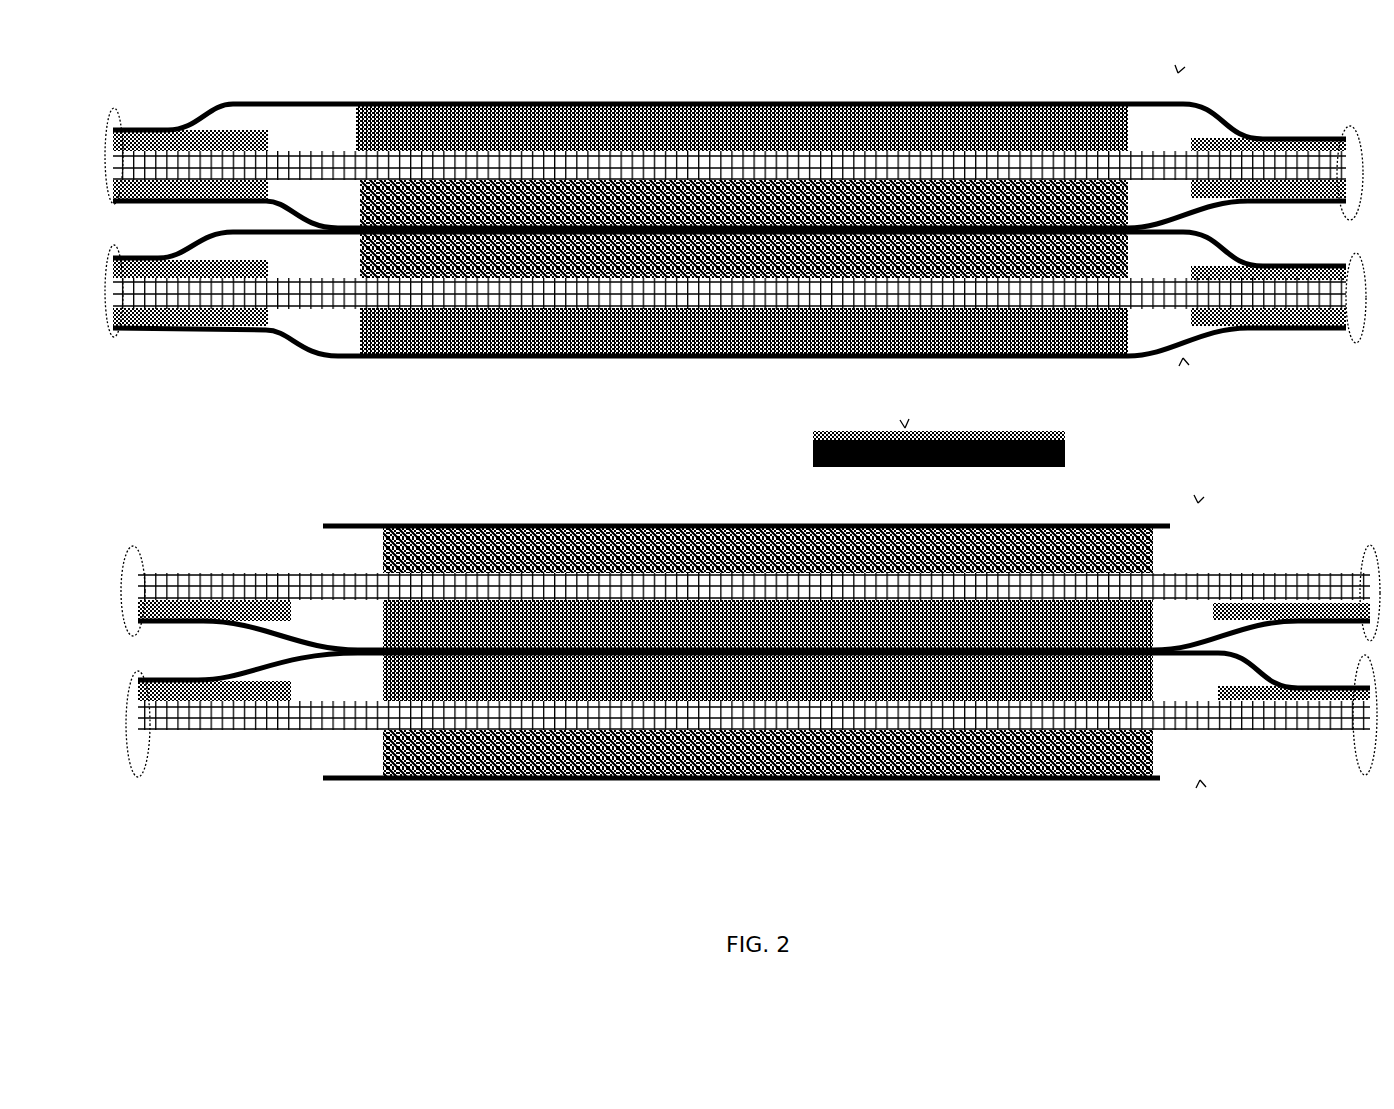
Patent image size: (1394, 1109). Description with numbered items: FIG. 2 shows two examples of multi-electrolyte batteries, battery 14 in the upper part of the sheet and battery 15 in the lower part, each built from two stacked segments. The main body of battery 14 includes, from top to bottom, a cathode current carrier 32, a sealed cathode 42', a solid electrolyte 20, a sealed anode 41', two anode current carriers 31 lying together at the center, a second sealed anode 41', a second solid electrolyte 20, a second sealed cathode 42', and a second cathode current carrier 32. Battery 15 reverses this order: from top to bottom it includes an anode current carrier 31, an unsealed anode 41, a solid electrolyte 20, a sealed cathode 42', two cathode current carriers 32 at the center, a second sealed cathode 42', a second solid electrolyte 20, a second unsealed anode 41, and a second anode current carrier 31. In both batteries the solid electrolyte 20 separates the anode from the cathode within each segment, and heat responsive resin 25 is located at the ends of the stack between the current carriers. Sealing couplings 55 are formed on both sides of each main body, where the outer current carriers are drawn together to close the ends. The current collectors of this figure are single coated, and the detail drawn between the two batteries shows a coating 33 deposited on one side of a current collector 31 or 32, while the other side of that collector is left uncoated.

The multi-electrolyte battery 14 is at (754, 397).
The multi-electrolyte battery 15 is at (742, 840).
The solid electrolyte 20 is at (1340, 272).
The heat responsive resin 25 is at (262, 130).
The anode current collector 31 is at (178, 195).
The cathode current collector 32 is at (222, 95).
The coating 33 is at (896, 418).
The unsealed anode 41 is at (726, 652).
The sealed anode 41' is at (711, 229).
The sealed cathode 42' is at (724, 367).
The sealing coupling 55 is at (110, 105).